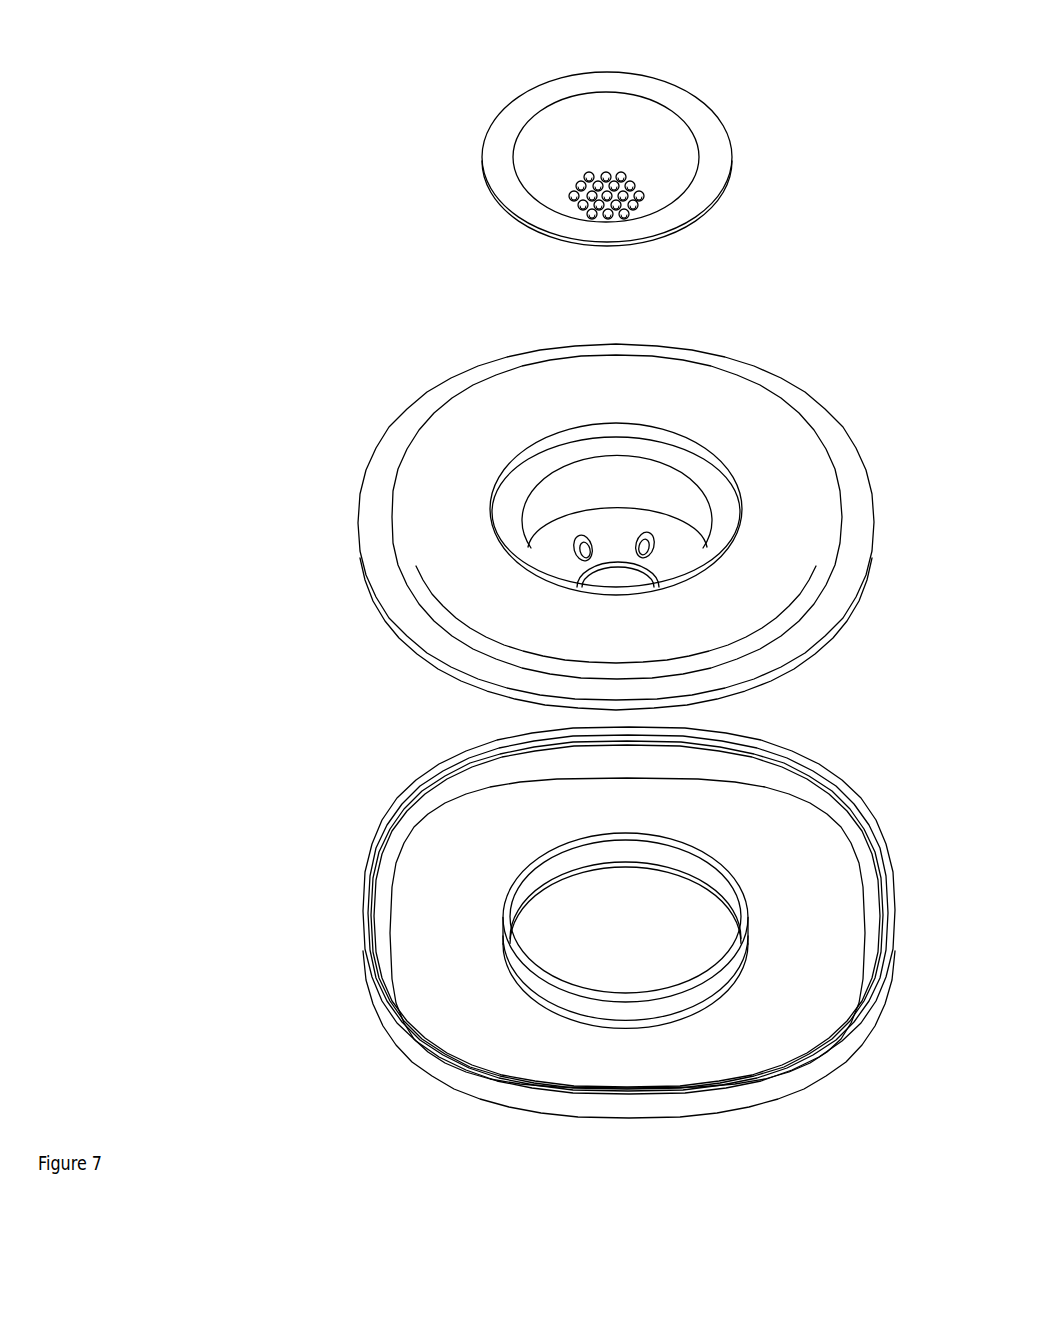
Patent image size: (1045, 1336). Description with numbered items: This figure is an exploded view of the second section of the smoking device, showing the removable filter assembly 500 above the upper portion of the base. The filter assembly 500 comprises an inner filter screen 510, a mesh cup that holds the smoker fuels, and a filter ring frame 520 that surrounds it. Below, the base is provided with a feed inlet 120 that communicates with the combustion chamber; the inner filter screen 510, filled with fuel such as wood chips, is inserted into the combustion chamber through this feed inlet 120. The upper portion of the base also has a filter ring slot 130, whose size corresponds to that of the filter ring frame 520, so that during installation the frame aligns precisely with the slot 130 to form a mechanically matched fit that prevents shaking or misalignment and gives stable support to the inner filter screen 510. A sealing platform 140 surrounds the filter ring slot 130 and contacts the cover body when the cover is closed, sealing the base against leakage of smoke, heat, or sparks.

The filter screen 500 is at (235, 43).
The inner filter screen 510 is at (572, 162).
The filter ring frame 520 is at (503, 183).
The feed inlet 120 is at (530, 496).
The filter ring slot 130 is at (710, 477).
The sealing platform 140 is at (498, 605).